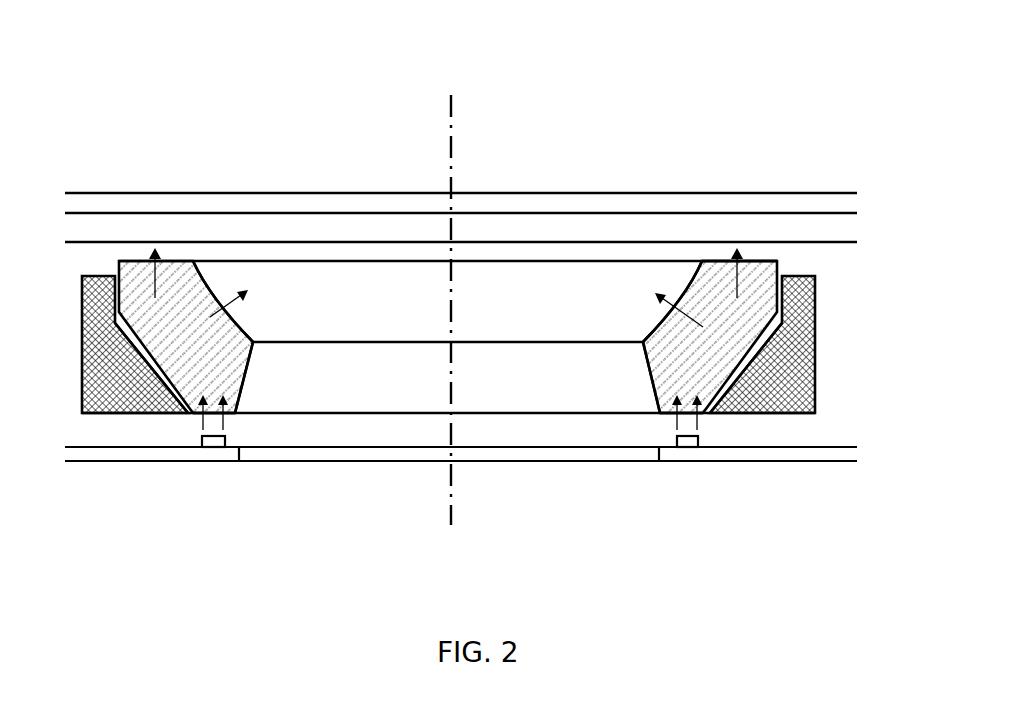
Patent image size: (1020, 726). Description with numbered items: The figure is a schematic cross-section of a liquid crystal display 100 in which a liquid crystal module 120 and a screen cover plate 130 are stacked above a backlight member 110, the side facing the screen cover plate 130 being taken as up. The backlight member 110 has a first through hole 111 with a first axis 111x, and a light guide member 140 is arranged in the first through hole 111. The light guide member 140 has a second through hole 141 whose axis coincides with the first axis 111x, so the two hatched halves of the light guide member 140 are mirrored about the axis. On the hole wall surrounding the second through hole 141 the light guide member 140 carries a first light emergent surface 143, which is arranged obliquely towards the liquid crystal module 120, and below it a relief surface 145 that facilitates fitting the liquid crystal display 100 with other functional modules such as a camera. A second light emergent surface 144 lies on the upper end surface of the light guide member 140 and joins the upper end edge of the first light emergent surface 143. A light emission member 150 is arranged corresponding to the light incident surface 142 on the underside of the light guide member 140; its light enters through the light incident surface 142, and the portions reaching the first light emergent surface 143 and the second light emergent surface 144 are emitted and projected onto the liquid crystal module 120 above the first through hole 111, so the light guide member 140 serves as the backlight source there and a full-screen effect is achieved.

The liquid crystal display 100 is at (213, 102).
The backlight member 110 is at (798, 348).
The first through hole 111 is at (115, 322).
The first axis 111x is at (452, 148).
The liquid crystal module 120 is at (788, 225).
The screen cover plate 130 is at (685, 198).
The light guide member 140 is at (688, 345).
The second through hole 141 is at (394, 276).
The light incident surface 142 is at (232, 414).
The first light emergent surface 143 is at (233, 322).
The second light emergent surface 144 is at (757, 261).
The relief surface 145 is at (240, 387).
The light emission member 150 is at (198, 445).